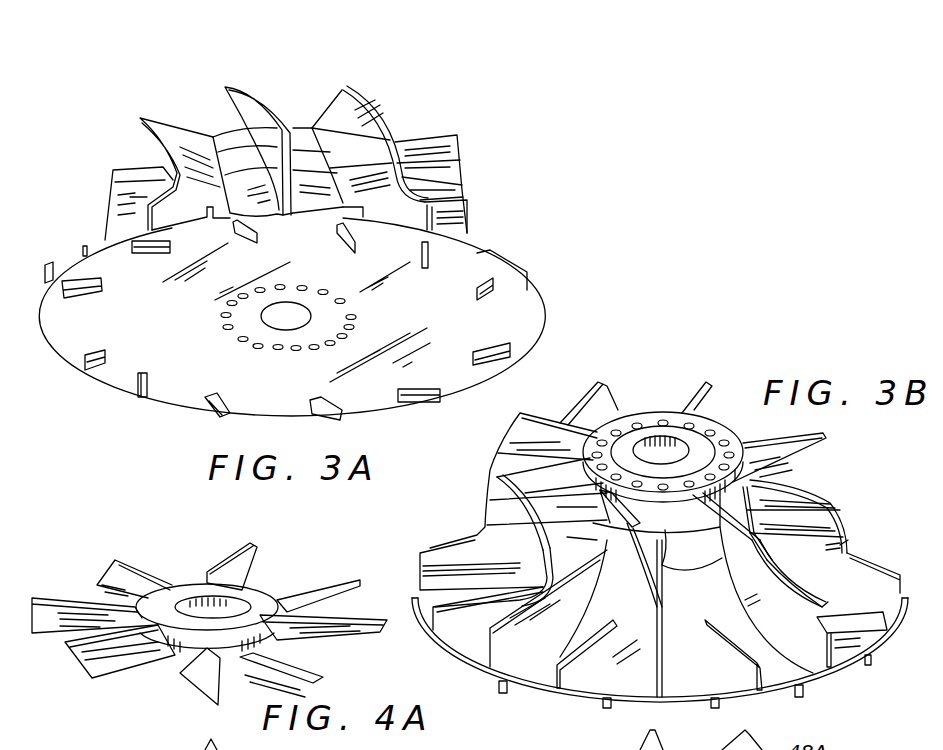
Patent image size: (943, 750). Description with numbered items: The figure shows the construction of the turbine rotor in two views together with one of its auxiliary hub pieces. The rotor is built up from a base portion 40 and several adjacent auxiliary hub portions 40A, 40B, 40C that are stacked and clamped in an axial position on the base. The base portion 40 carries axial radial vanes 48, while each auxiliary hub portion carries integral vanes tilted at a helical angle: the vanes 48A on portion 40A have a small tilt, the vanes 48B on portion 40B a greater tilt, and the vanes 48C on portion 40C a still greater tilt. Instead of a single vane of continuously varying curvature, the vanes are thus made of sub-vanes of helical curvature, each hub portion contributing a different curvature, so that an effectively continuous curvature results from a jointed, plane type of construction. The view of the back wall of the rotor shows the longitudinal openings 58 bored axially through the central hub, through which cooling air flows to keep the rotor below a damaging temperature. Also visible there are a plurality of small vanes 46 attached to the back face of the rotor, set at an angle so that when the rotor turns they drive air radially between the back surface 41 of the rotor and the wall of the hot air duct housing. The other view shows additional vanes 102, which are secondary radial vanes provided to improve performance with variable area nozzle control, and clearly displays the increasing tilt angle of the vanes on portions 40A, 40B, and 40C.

In FIG. 3A, the base portion of the turbine rotor 40 is at (428, 318).
In FIG. 3B, the base portion of the turbine rotor 40 is at (708, 677).
In FIG. 3A, the auxiliary hub portion 40A is at (313, 187).
In FIG. 3B, the auxiliary hub portion 40A is at (690, 553).
In FIG. 3A, the auxiliary hub portion 40B is at (307, 155).
In FIG. 3B, the auxiliary hub portion 40B is at (695, 530).
In FIG. 3A, the auxiliary hub portion 40C is at (292, 128).
In FIG. 3B, the auxiliary hub portion 40C is at (667, 413).
In FIG. 4A, the auxiliary hub portion 40C is at (168, 598).
In FIG. 3A, the back surface of the rotor 41 is at (530, 312).
In FIG. 3A, the small vanes 46 is at (105, 352).
In FIG. 3B, the small vanes 46 is at (600, 707).
In FIG. 3A, the radial vanes 48 is at (163, 203).
In FIG. 3B, the radial vanes 48 is at (475, 548).
In FIG. 3A, the vanes 48A is at (393, 137).
In FIG. 3B, the vanes 48A is at (842, 520).
In FIG. 3A, the vanes 48B is at (385, 132).
In FIG. 3B, the vanes 48B is at (830, 500).
In FIG. 3A, the vanes 48C is at (362, 112).
In FIG. 3B, the vanes 48C is at (787, 483).
In FIG. 4A, the vanes 48C is at (247, 563).
In FIG. 3A, the longitudinal openings 58 is at (255, 348).
In FIG. 3B, the longitudinal openings 58 is at (701, 425).
In FIG. 3B, the additional vanes 102 is at (870, 627).